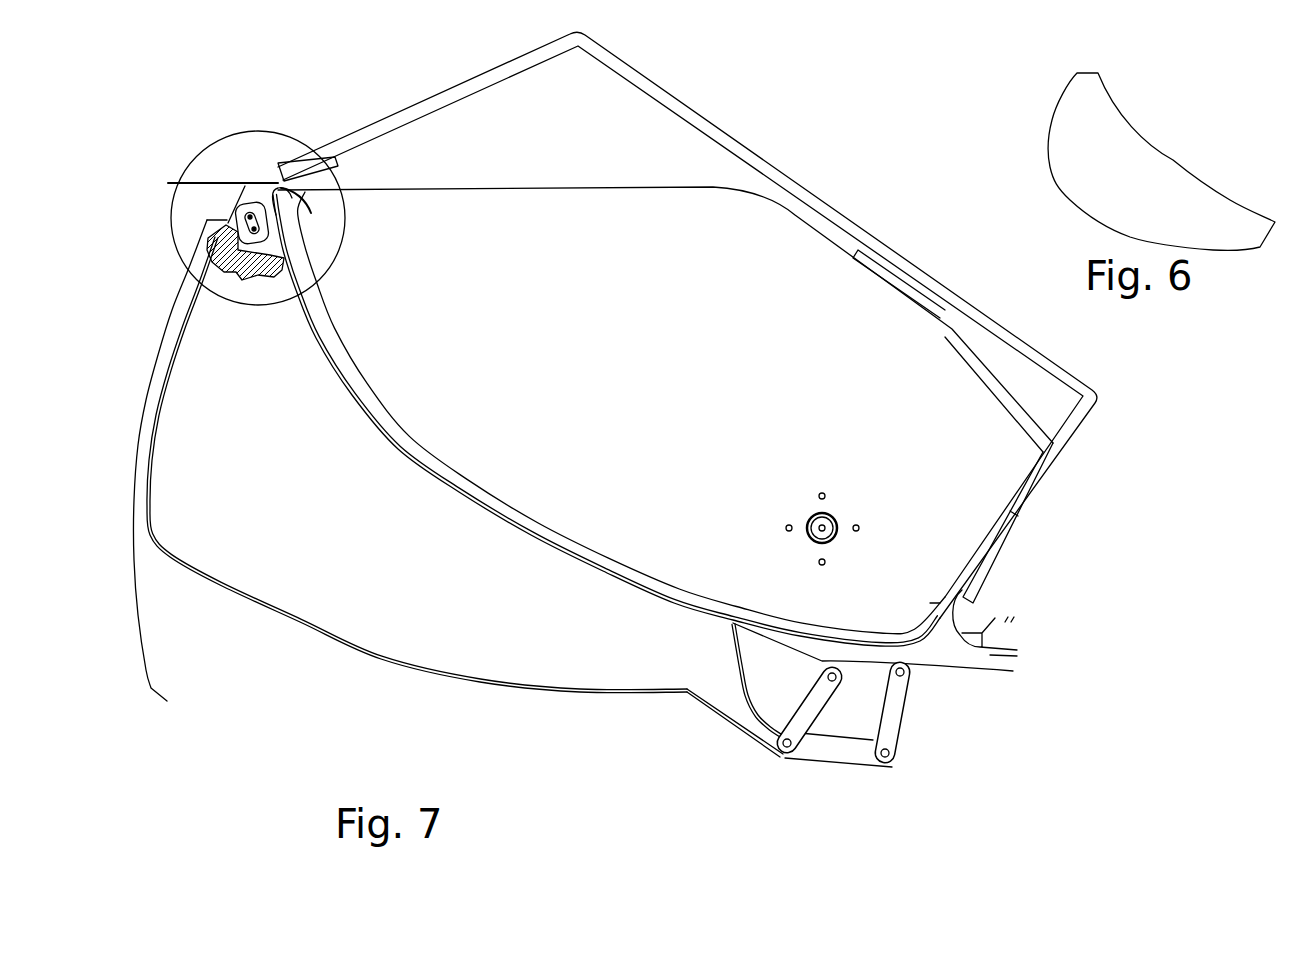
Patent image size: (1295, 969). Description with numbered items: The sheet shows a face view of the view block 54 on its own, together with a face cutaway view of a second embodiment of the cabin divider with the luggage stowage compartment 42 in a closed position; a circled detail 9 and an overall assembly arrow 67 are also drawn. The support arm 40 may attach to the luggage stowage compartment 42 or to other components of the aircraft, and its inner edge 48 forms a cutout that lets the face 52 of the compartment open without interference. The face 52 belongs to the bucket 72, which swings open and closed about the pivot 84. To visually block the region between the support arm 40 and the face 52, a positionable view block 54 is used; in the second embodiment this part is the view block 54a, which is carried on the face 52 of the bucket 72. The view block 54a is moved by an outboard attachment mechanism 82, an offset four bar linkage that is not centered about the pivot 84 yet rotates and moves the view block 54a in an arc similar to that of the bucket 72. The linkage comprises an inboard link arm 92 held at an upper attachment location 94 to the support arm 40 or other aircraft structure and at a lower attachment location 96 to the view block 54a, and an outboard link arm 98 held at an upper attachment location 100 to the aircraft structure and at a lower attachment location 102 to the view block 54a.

In FIG. 7, the detail circle of frame attachment 9 is at (228, 138).
In FIG. 7, the support arm 40 is at (178, 300).
In FIG. 7, the luggage stowage compartment 42 is at (780, 167).
In FIG. 7, the inner edge 48 is at (155, 354).
In FIG. 7, the face 52 is at (593, 575).
In FIG. 6, the view block 54 is at (1215, 168).
In FIG. 7, the view block 54a is at (341, 605).
In FIG. 7, the door assembly 67 is at (108, 472).
In FIG. 7, the bucket 72 is at (527, 188).
In FIG. 7, the outboard attachment mechanism 82 is at (860, 787).
In FIG. 7, the pivot 84 is at (830, 517).
In FIG. 7, the inboard link arm 92 is at (757, 740).
In FIG. 7, the upper attachment location 94 is at (827, 678).
In FIG. 7, the lower attachment location 96 is at (782, 763).
In FIG. 7, the outboard link arm 98 is at (905, 713).
In FIG. 7, the upper attachment location 100 is at (905, 674).
In FIG. 7, the lower attachment location 102 is at (895, 755).